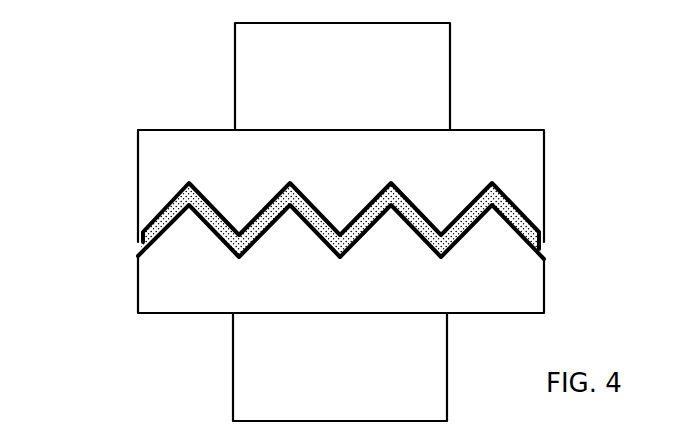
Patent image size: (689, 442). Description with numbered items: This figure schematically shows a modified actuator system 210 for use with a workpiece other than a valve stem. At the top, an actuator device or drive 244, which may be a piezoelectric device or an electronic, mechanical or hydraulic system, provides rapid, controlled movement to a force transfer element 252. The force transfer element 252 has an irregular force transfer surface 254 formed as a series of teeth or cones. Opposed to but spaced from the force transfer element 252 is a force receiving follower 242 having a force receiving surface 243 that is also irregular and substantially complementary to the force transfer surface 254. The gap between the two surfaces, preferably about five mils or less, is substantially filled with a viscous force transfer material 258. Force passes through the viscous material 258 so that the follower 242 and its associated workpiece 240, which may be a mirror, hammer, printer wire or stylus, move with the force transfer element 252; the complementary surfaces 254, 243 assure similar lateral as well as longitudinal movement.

The actuator system 210 is at (141, 354).
The actuator device or drive 244 is at (243, 67).
The workpiece 240 is at (243, 388).
The force transfer element 252 is at (146, 176).
The force receiving follower 242 is at (143, 297).
The force transfer surface 254 is at (142, 224).
The viscous force transfer material 258 is at (522, 212).
The force receiving surface 243 is at (138, 247).